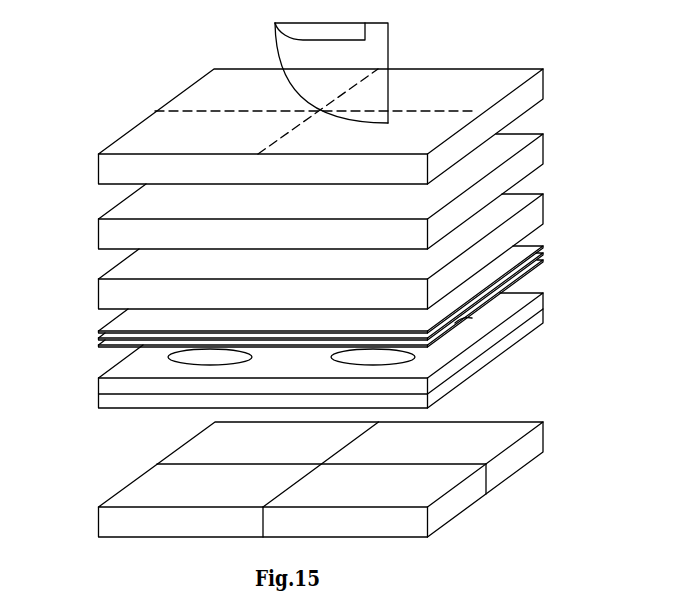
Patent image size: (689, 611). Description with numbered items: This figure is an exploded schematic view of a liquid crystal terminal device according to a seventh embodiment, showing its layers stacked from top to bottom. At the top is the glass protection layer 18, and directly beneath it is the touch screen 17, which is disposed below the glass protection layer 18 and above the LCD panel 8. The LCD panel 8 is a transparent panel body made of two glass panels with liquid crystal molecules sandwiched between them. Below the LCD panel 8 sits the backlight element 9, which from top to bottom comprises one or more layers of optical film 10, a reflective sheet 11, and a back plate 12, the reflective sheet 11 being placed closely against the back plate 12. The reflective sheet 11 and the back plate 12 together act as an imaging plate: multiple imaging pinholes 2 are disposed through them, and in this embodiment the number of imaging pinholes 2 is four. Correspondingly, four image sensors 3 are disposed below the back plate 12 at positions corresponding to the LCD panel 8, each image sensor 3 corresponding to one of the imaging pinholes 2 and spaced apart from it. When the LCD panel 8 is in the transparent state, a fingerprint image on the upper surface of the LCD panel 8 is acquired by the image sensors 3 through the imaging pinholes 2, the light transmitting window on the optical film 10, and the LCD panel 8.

The imaging pinhole 2 is at (415, 357).
The image sensor 3 is at (203, 448).
The LCD panel 8 is at (116, 296).
The backlight element 9 is at (53, 323).
The optical film 10 is at (107, 333).
The reflective sheet 11 is at (117, 388).
The back plate 12 is at (113, 402).
The touch screen 17 is at (119, 231).
The glass protection layer 18 is at (202, 102).